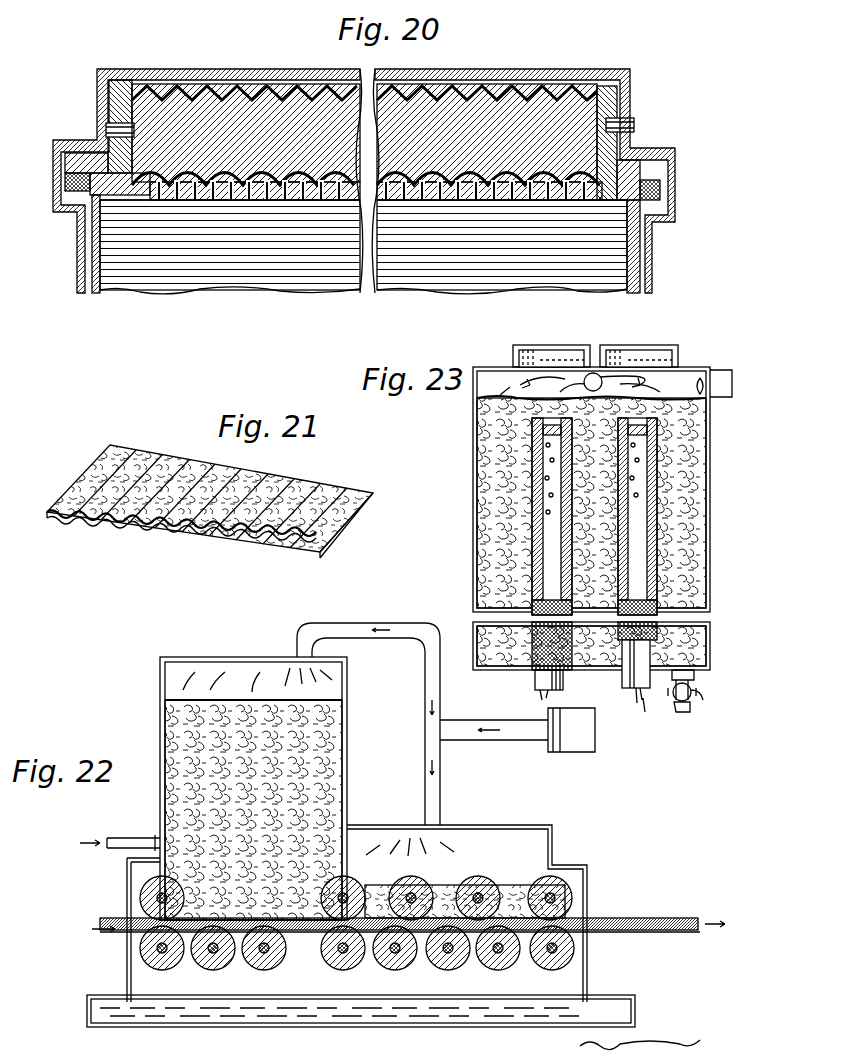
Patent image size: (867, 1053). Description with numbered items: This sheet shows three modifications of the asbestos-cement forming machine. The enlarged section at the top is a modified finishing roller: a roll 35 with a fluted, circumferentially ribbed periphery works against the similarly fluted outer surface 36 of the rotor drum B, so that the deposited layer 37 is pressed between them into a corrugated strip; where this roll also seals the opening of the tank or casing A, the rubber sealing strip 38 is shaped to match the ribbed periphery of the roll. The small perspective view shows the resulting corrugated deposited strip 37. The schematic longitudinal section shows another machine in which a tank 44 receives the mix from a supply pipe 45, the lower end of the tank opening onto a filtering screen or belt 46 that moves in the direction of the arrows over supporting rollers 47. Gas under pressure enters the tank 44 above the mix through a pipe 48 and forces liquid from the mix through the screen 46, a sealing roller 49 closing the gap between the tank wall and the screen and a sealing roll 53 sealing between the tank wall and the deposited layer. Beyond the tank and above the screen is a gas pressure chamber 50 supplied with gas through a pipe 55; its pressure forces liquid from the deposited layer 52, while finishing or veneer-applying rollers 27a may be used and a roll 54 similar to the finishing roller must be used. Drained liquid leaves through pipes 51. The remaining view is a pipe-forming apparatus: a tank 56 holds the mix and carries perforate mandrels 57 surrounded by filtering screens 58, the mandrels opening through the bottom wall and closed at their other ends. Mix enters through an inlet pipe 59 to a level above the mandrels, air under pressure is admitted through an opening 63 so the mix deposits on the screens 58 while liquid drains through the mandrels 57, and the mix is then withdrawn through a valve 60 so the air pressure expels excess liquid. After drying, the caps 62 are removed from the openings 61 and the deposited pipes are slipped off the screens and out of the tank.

In FIG. 20, the roll 35 is at (585, 112).
In FIG. 20, the rotor drum outer surface 36 is at (215, 198).
In FIG. 20, the deposited layer 37 is at (462, 198).
In FIG. 21, the deposited layer 37 is at (175, 528).
In FIG. 20, the rubber sealing strip 38 is at (560, 88).
In FIG. 20, the tank or casing A is at (633, 72).
In FIG. 20, the rotor drum B is at (106, 299).
In FIG. 22, the tank 44 is at (344, 730).
In FIG. 22, the supply pipe 45 is at (124, 836).
In FIG. 22, the filtering screen or belt 46 is at (400, 956).
In FIG. 22, the supporting rollers 47 is at (570, 950).
In FIG. 22, the pipe 48 is at (380, 603).
In FIG. 22, the sealing roller 49 is at (140, 884).
In FIG. 22, the gas pressure chamber 50 is at (490, 838).
In FIG. 22, the pipes 51 is at (636, 1010).
In FIG. 22, the deposited layer 52 is at (615, 918).
In FIG. 22, the sealing roll 53 is at (360, 845).
In FIG. 22, the roll 54 is at (560, 870).
In FIG. 22, the pipe 55 is at (470, 797).
In FIG. 22, the finishing or veneer-applying rollers 27a is at (505, 875).
In FIG. 23, the tank 56 is at (712, 472).
In FIG. 23, the perforate mandrels 57 is at (624, 680).
In FIG. 23, the filtering screens 58 is at (478, 632).
In FIG. 23, the inlet pipe 59 is at (712, 370).
In FIG. 23, the valve 60 is at (700, 700).
In FIG. 23, the openings 61 is at (653, 347).
In FIG. 23, the removable caps 62 is at (549, 345).
In FIG. 23, the opening 63 is at (596, 365).